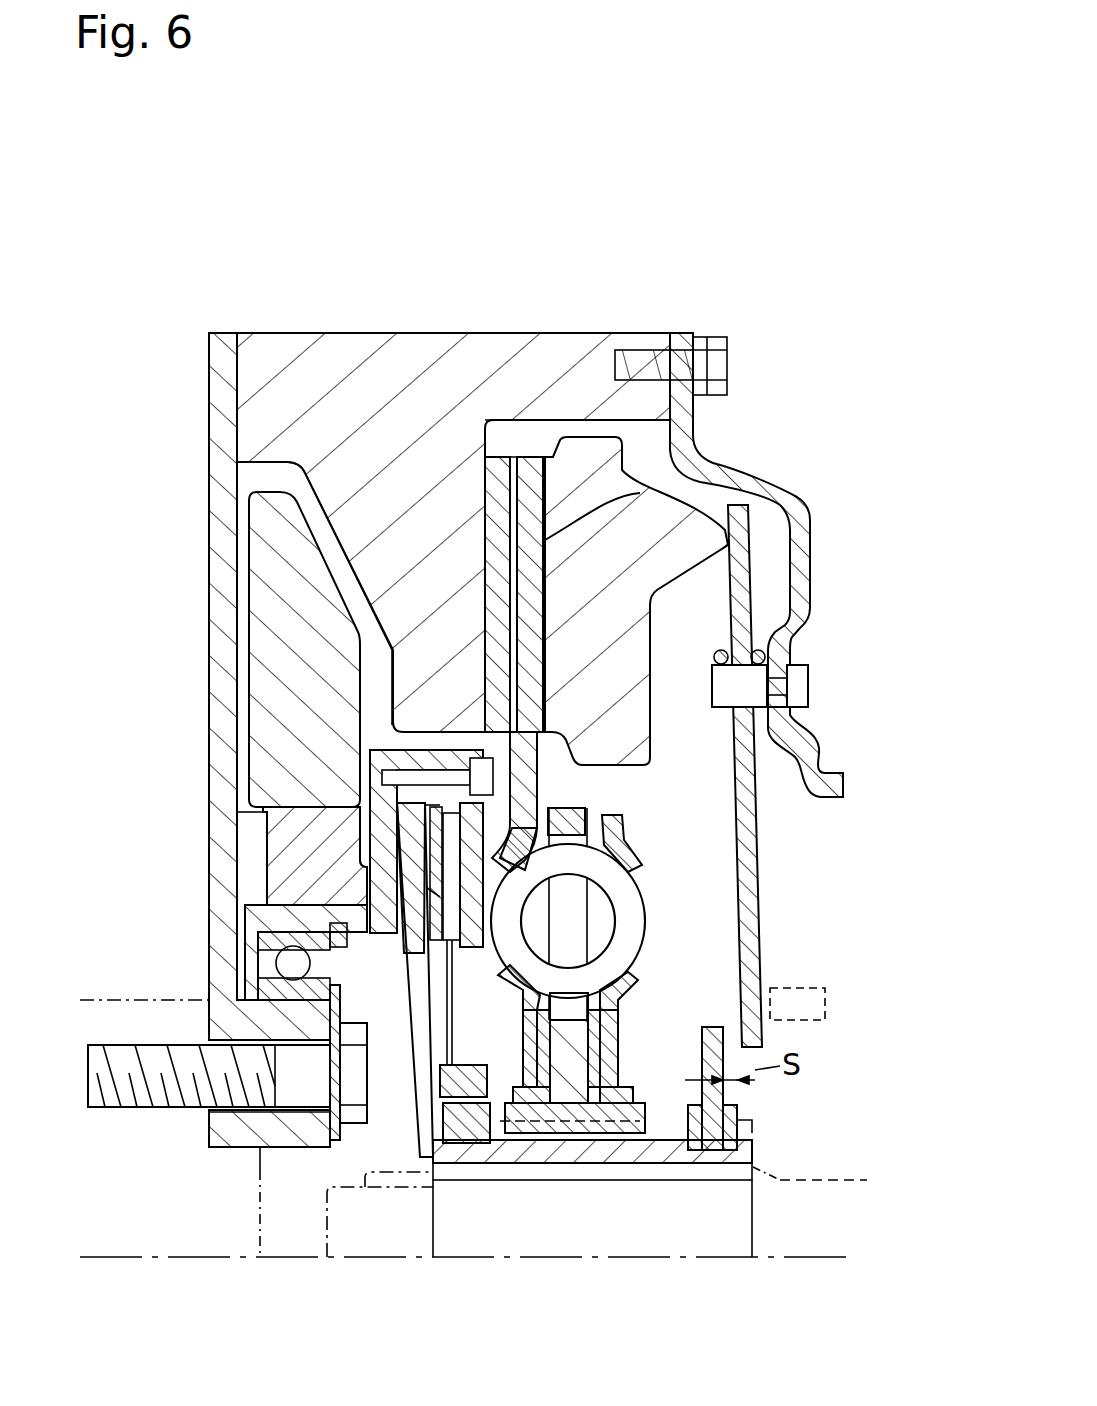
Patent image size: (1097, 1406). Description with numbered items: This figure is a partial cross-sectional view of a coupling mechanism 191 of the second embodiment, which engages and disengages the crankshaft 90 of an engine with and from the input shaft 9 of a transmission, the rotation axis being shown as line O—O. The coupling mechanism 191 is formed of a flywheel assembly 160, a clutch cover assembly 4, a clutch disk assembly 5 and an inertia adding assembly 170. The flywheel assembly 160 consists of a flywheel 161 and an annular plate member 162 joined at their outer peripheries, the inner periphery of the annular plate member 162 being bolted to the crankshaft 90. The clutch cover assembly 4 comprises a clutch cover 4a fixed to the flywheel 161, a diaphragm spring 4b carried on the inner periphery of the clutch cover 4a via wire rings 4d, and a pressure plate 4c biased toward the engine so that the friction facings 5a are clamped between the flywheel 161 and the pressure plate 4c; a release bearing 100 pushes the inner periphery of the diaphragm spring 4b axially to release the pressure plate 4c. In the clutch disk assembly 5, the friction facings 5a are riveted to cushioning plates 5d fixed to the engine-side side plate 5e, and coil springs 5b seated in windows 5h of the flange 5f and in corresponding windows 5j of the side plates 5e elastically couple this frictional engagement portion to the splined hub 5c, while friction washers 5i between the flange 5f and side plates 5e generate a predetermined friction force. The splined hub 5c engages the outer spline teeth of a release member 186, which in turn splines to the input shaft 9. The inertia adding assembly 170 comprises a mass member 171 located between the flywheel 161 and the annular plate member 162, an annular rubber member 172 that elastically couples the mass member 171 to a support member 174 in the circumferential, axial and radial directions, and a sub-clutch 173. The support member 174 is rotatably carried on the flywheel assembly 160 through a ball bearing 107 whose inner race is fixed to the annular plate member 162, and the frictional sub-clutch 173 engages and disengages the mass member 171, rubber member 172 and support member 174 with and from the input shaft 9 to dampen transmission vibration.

The coupling mechanism 191 is at (655, 270).
The flywheel assembly 160 is at (379, 332).
The flywheel 161 is at (440, 435).
The annular plate member 162 is at (222, 487).
The inertia adding assembly 170 is at (276, 486).
The mass member 171 is at (282, 630).
The annular rubber member 172 is at (290, 834).
The sub-clutch 173 is at (386, 1122).
The support member 174 is at (256, 922).
The ball bearing 107 is at (260, 979).
The crankshaft 90 is at (82, 1000).
The release bearing 100 is at (802, 988).
The release member 186 is at (585, 1172).
The input shaft 9 is at (792, 1182).
The clutch cover assembly 4 is at (792, 487).
The clutch cover 4a is at (800, 610).
The diaphragm spring 4b is at (700, 563).
The pressure plate 4c is at (627, 757).
The wire rings 4d is at (717, 652).
The clutch disk assembly 5 is at (670, 839).
The friction facings 5a is at (535, 480).
The coil springs 5b is at (625, 917).
The splined hub 5c is at (518, 1132).
The cushioning plates 5d is at (690, 452).
The side plates 5e is at (528, 1078).
The flange 5f is at (580, 1057).
The windows 5h is at (583, 858).
The friction washers 5i is at (557, 1078).
The windows 5j is at (515, 980).